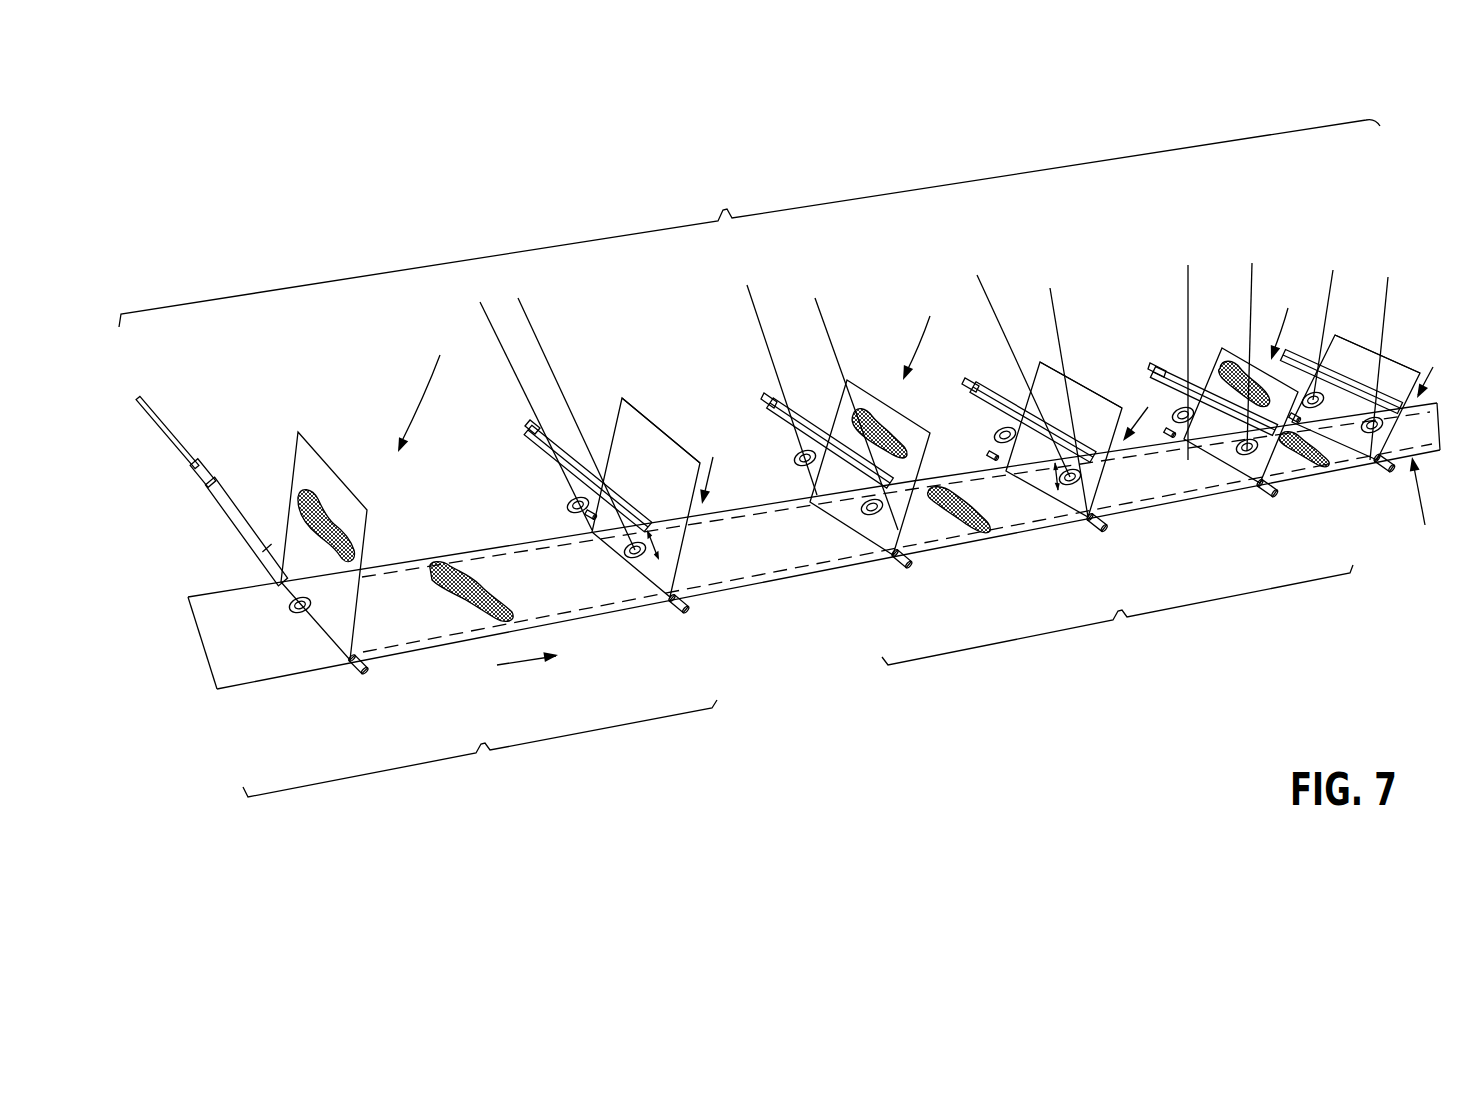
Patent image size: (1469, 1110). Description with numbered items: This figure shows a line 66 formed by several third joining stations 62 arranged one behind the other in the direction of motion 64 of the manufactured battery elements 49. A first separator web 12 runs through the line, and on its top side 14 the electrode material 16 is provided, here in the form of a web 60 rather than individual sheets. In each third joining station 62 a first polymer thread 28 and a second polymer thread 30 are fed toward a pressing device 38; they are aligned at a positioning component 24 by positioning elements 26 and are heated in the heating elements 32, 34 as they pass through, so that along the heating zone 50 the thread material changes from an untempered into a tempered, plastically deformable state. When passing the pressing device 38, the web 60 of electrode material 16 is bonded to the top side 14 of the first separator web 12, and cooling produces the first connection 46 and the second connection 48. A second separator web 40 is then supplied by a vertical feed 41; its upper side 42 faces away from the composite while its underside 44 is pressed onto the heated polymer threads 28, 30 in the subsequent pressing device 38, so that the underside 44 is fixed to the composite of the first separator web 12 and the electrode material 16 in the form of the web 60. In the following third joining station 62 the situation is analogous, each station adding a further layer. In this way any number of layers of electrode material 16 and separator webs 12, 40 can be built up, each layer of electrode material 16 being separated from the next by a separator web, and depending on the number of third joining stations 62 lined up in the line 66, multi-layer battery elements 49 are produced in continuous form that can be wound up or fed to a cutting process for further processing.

The first separator web 12 is at (270, 680).
The top side of the first separator web 14 is at (210, 613).
The electrode material 16 is at (338, 468).
The positioning component 24 is at (199, 460).
The positioning elements 26 is at (272, 543).
The first polymer thread 28 is at (166, 437).
The second polymer thread 30 is at (150, 397).
The heating element 32 is at (290, 608).
The heating element 34 is at (570, 498).
The pressing device 38 is at (357, 680).
The second separator web 40 is at (660, 430).
The vertical feed 41 is at (717, 457).
The upper side of the second separator web 42 is at (814, 500).
The underside of the second separator web 44 is at (1362, 310).
The first connection 46 is at (455, 652).
The second connection 48 is at (453, 557).
The battery element 49 is at (1427, 503).
The heating zone 50 is at (652, 545).
The web 60 is at (852, 363).
The third joining station 62 is at (798, 684).
The direction of motion 64 is at (518, 660).
The line 66 is at (749, 223).